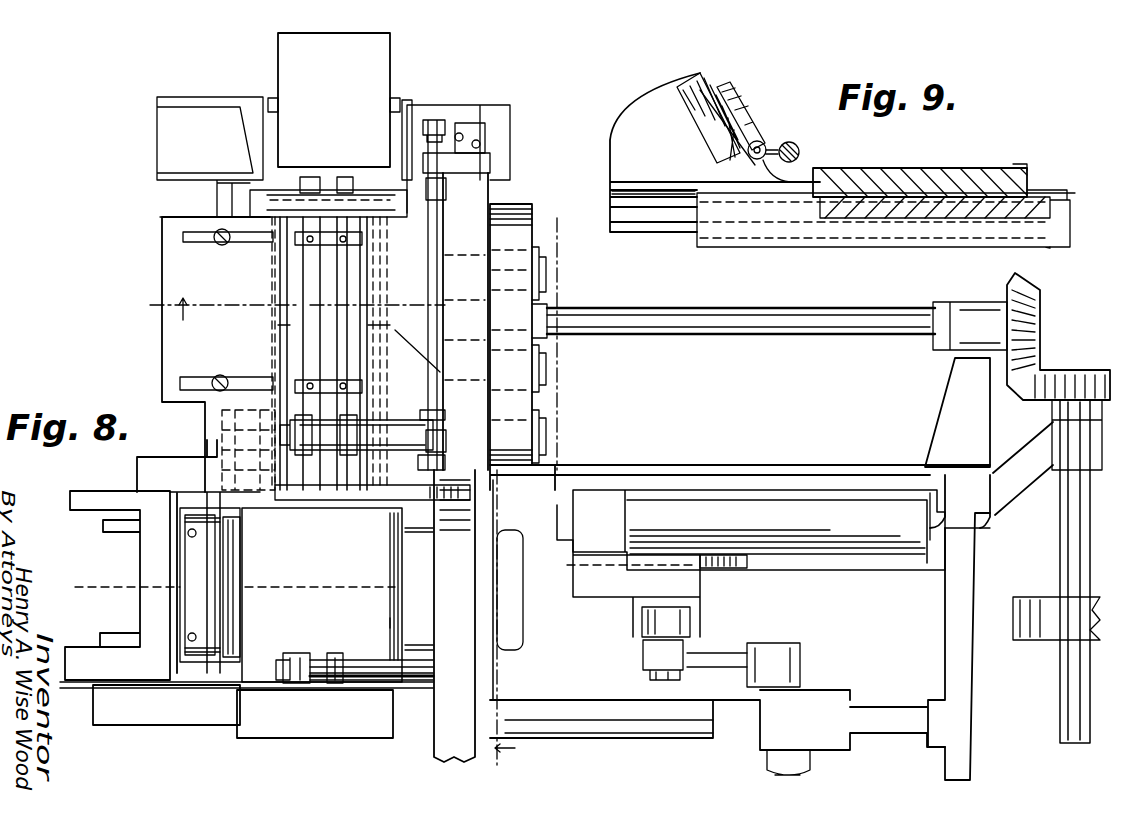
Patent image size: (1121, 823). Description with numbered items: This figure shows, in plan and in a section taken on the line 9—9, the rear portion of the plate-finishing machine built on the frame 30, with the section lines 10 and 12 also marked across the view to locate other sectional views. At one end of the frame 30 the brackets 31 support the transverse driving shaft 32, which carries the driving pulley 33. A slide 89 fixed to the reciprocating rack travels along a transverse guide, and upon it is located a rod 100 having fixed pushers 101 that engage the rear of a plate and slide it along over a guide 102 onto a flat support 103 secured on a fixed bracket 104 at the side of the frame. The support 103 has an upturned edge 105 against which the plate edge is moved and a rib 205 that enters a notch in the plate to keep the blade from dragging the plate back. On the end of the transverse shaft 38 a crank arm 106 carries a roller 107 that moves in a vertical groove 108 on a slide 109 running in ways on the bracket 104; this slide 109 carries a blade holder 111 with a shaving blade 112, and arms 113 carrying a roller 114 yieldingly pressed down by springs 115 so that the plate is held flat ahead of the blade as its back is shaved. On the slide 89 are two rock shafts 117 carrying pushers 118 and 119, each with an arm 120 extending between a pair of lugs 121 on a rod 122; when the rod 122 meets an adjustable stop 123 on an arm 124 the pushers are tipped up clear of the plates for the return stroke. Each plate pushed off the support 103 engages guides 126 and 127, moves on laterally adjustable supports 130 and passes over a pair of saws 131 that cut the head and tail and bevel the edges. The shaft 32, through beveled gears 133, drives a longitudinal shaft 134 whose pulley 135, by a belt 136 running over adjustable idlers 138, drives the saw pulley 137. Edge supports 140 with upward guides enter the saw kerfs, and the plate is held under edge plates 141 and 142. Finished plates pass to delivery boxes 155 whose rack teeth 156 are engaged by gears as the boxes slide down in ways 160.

In FIG. 8, the section line 9— 9 is at (239, 587).
In FIG. 8, the drum / section line 10- 10 is at (533, 491).
In FIG. 8, the section line 12- 12 is at (282, 305).
In FIG. 8, the frame 30 is at (965, 570).
In FIG. 8, the brackets 31 is at (1028, 457).
In FIG. 8, the transverse driving shaft 32 is at (1062, 523).
In FIG. 8, the driving pulley 33 is at (1022, 640).
In FIG. 8, the transverse shaft 38 is at (810, 770).
In FIG. 8, the slide 89 is at (435, 755).
In FIG. 8, the rod 100 is at (368, 672).
In FIG. 8, the pushers 101 is at (330, 657).
In FIG. 8, the guide 102 is at (268, 725).
In FIG. 8, the flat support 103 is at (392, 580).
In FIG. 9, the flat support 103 is at (960, 162).
In FIG. 8, the fixed bracket 104 is at (590, 495).
In FIG. 9, the fixed bracket 104 is at (735, 247).
In FIG. 8, the upturned edge 105 is at (400, 556).
In FIG. 9, the upturned edge 105 is at (1030, 170).
In FIG. 8, the crank arm 106 is at (718, 660).
In FIG. 8, the roller 107 is at (690, 620).
In FIG. 8, the vertical groove 108 is at (643, 640).
In FIG. 8, the slide 109 is at (545, 700).
In FIG. 9, the slide 109 is at (655, 230).
In FIG. 8, the blade holder 111 is at (150, 550).
In FIG. 9, the blade holder 111 is at (707, 140).
In FIG. 8, the shaving blade 112 is at (215, 575).
In FIG. 9, the shaving blade 112 is at (727, 138).
In FIG. 8, the arms 113 is at (220, 530).
In FIG. 9, the arms 113 is at (774, 148).
In FIG. 8, the roller 114 is at (240, 610).
In FIG. 9, the roller 114 is at (800, 148).
In FIG. 9, the springs 115 is at (712, 95).
In FIG. 8, the rock shafts 117 is at (330, 180).
In FIG. 8, the pushers 118 is at (330, 462).
In FIG. 8, the pushers 119 is at (283, 240).
In FIG. 8, the arm 120 is at (438, 195).
In FIG. 8, the lugs 121 is at (495, 178).
In FIG. 8, the rod 122 is at (460, 255).
In FIG. 8, the adjustable stop 123 is at (440, 118).
In FIG. 8, the arm 124 is at (470, 120).
In FIG. 8, the guide 126 is at (378, 503).
In FIG. 8, the guide 127 is at (247, 477).
In FIG. 8, the laterally adjustable supports 130 is at (345, 285).
In FIG. 8, the saws 131 is at (270, 410).
In FIG. 8, the beveled gears 133 is at (1020, 365).
In FIG. 8, the longitudinal shaft 134 is at (728, 338).
In FIG. 8, the pulley 135 is at (545, 250).
In FIG. 8, the belt 136 is at (545, 372).
In FIG. 8, the saw pulley 137 is at (548, 412).
In FIG. 8, the adjustable idlers 138 is at (540, 345).
In FIG. 8, the edge supports 140 is at (285, 328).
In FIG. 8, the edge plate 141 is at (164, 328).
In FIG. 8, the edge plate 142 is at (437, 360).
In FIG. 8, the delivery boxes 155 is at (296, 52).
In FIG. 8, the rack teeth 156 is at (275, 100).
In FIG. 8, the ways 160 is at (252, 153).
In FIG. 8, the rib 205 is at (392, 623).
In FIG. 9, the rib 205 is at (1015, 166).